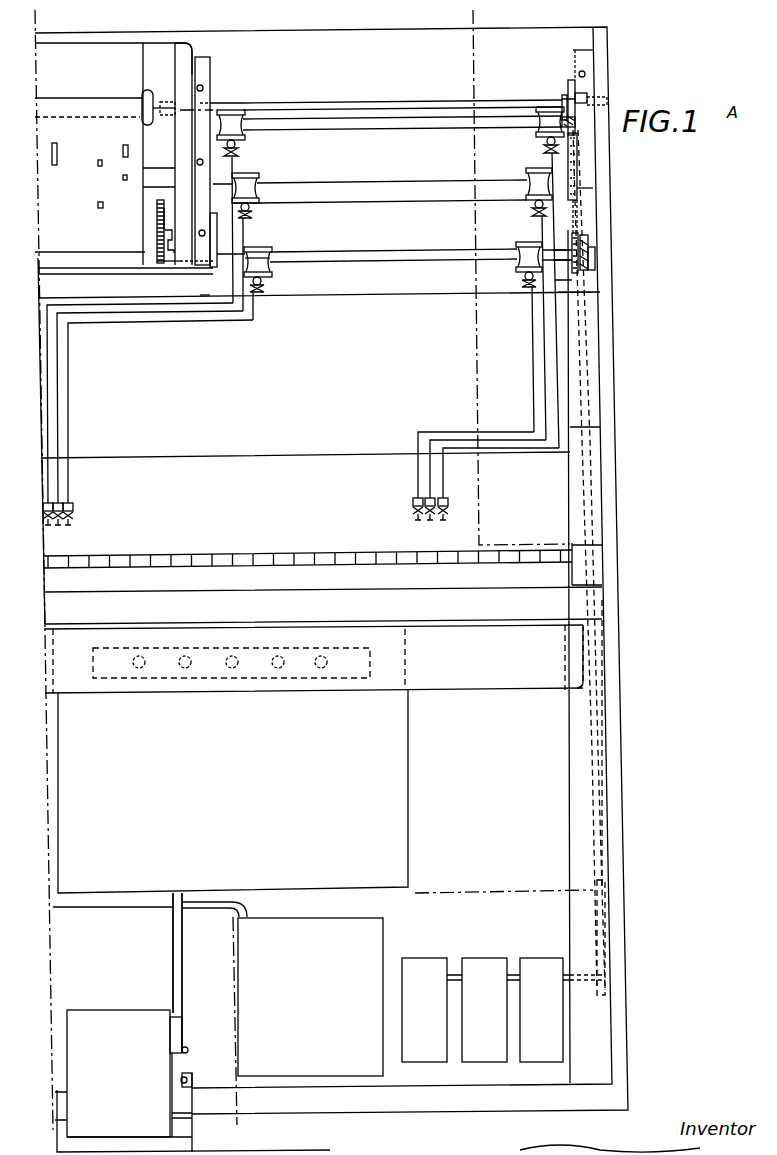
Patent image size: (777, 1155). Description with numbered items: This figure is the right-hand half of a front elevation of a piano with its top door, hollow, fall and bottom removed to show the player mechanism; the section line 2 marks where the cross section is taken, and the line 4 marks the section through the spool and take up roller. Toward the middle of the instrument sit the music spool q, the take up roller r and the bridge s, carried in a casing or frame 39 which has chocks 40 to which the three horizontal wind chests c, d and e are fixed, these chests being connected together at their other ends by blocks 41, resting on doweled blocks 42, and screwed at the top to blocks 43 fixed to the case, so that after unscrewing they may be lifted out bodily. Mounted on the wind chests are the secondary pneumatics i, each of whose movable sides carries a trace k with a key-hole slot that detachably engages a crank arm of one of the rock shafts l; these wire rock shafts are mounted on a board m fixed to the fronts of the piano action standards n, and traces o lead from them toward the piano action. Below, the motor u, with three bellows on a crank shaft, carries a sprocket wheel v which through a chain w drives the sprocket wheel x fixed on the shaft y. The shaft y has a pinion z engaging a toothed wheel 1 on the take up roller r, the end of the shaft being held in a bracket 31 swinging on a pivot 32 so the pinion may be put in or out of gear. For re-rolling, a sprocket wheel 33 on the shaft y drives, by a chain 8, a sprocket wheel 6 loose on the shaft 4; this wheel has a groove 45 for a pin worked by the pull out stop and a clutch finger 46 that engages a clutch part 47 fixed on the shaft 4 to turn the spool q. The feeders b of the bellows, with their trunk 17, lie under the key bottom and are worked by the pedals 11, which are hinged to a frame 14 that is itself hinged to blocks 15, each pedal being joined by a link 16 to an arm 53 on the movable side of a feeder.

The shaft 4 is at (205, 569).
The section line 2- 2 is at (413, 572).
The bridge s is at (124, 158).
The chock 40 is at (201, 66).
The casing or frame 39 is at (182, 57).
The spool q is at (147, 90).
The take up roller r is at (157, 218).
The toothed wheel 1 is at (165, 216).
The pinion z is at (157, 262).
The wind chest c is at (387, 98).
The wind chest d is at (370, 172).
The wind chest e is at (393, 237).
The shaft y is at (423, 267).
The secondary pneumatic i is at (232, 110).
The trace k is at (237, 161).
The rock shaft l is at (157, 315).
The trace o is at (50, 385).
The pivot 32 is at (257, 203).
The bracket 31 is at (268, 242).
The board m is at (356, 370).
The block 43 is at (585, 48).
The groove 45 is at (563, 93).
The sprocket wheel 6 is at (575, 83).
The clutch finger 46 is at (583, 95).
The clutch part 47 is at (583, 107).
The block 41 is at (585, 122).
The chain 8 is at (593, 188).
The sprocket wheel 33 is at (577, 235).
The sprocket wheel x is at (588, 238).
The block 42 is at (595, 262).
The piano action standard n is at (562, 279).
The chain w is at (597, 797).
The trunk 17 is at (249, 662).
The feeder b is at (233, 791).
The arm 53 is at (182, 953).
The pedal 11 is at (118, 1073).
The connecting rod or link 16 is at (176, 1028).
The block 15 is at (192, 1076).
The frame 14 is at (185, 1098).
The motor u is at (502, 1010).
The sprocket wheel v is at (605, 960).